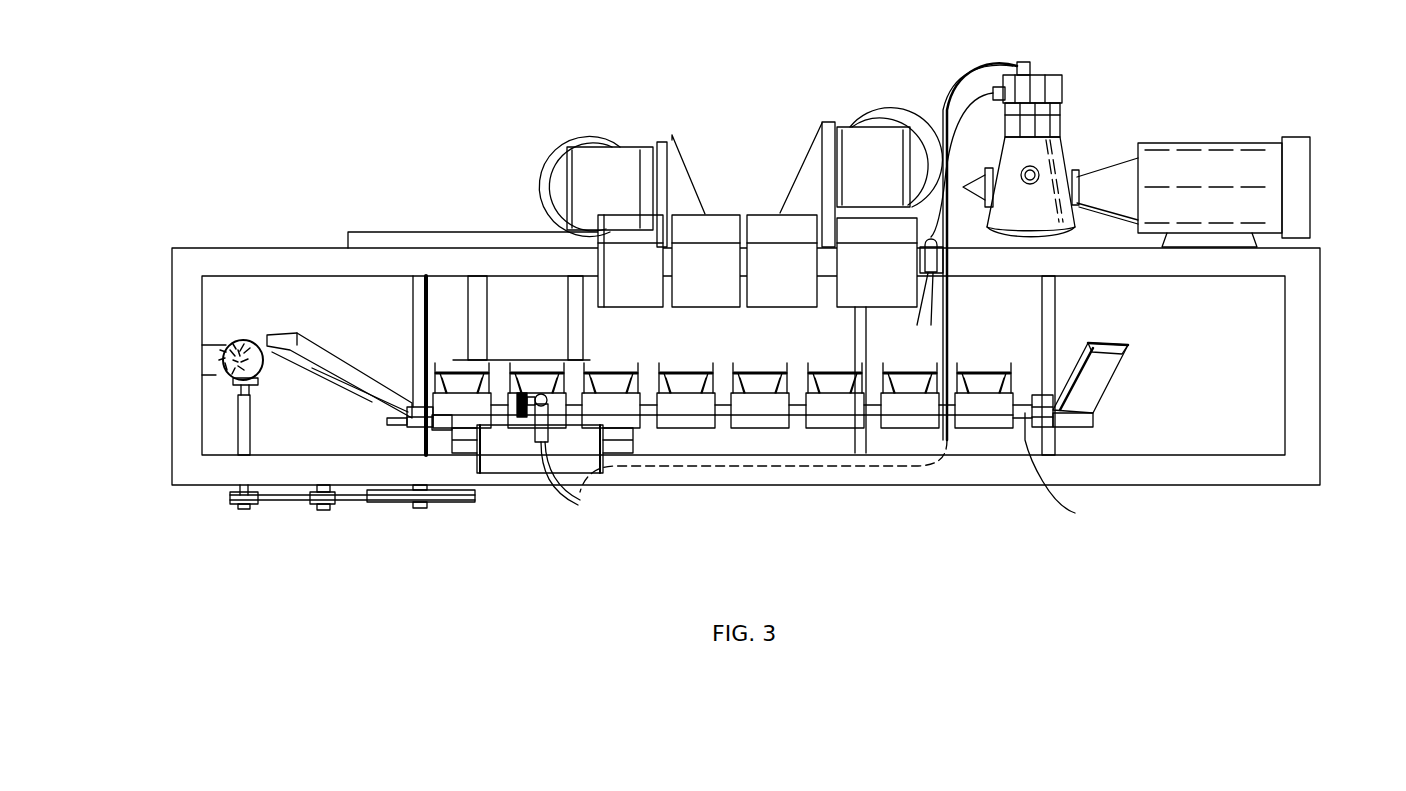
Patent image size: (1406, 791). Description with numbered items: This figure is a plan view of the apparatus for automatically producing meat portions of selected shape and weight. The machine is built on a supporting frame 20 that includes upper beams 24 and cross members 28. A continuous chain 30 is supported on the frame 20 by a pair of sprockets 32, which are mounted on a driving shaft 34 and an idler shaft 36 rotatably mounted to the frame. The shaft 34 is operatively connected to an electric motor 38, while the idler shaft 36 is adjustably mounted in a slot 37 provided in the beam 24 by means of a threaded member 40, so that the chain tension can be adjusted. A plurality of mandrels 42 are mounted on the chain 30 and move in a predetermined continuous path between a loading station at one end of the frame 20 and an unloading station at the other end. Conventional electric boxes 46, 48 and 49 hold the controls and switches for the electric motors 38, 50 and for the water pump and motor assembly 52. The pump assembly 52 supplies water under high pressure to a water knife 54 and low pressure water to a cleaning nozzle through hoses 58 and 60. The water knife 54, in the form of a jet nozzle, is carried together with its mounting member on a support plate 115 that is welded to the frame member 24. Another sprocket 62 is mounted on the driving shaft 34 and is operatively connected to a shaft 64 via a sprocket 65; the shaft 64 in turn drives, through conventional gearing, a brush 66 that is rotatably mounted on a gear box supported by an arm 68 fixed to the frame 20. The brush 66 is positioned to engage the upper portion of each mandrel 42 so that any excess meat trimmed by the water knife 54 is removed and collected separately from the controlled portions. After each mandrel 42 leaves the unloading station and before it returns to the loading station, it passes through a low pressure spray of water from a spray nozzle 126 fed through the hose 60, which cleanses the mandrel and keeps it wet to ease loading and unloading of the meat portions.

The supporting frame 20 is at (1203, 488).
The upper beam 24 is at (272, 247).
The cross member 28 is at (172, 362).
The continuous chain 30 is at (1066, 470).
The sprocket 32 is at (408, 410).
The shaft 34 is at (415, 320).
The idler shaft 36 is at (1057, 318).
The slot 37 is at (250, 387).
The electric motor 38 is at (620, 142).
The threaded member 40 is at (1108, 394).
The mandrel 42 is at (275, 330).
The electric box 46 is at (643, 284).
The electric box 48 is at (713, 284).
The electric box 49 is at (887, 284).
The electric motor 50 is at (838, 126).
The water pump and motor assembly 52 is at (1185, 148).
The water knife 54 is at (528, 435).
The hose 58 is at (578, 505).
The hose 60 is at (988, 70).
The sprocket 62 is at (390, 502).
The shaft 64 is at (238, 413).
The sprocket 65 is at (236, 504).
The brush 66 is at (233, 352).
The arm 68 is at (212, 378).
The support plate 115 is at (486, 462).
The spray nozzle 126 is at (924, 295).